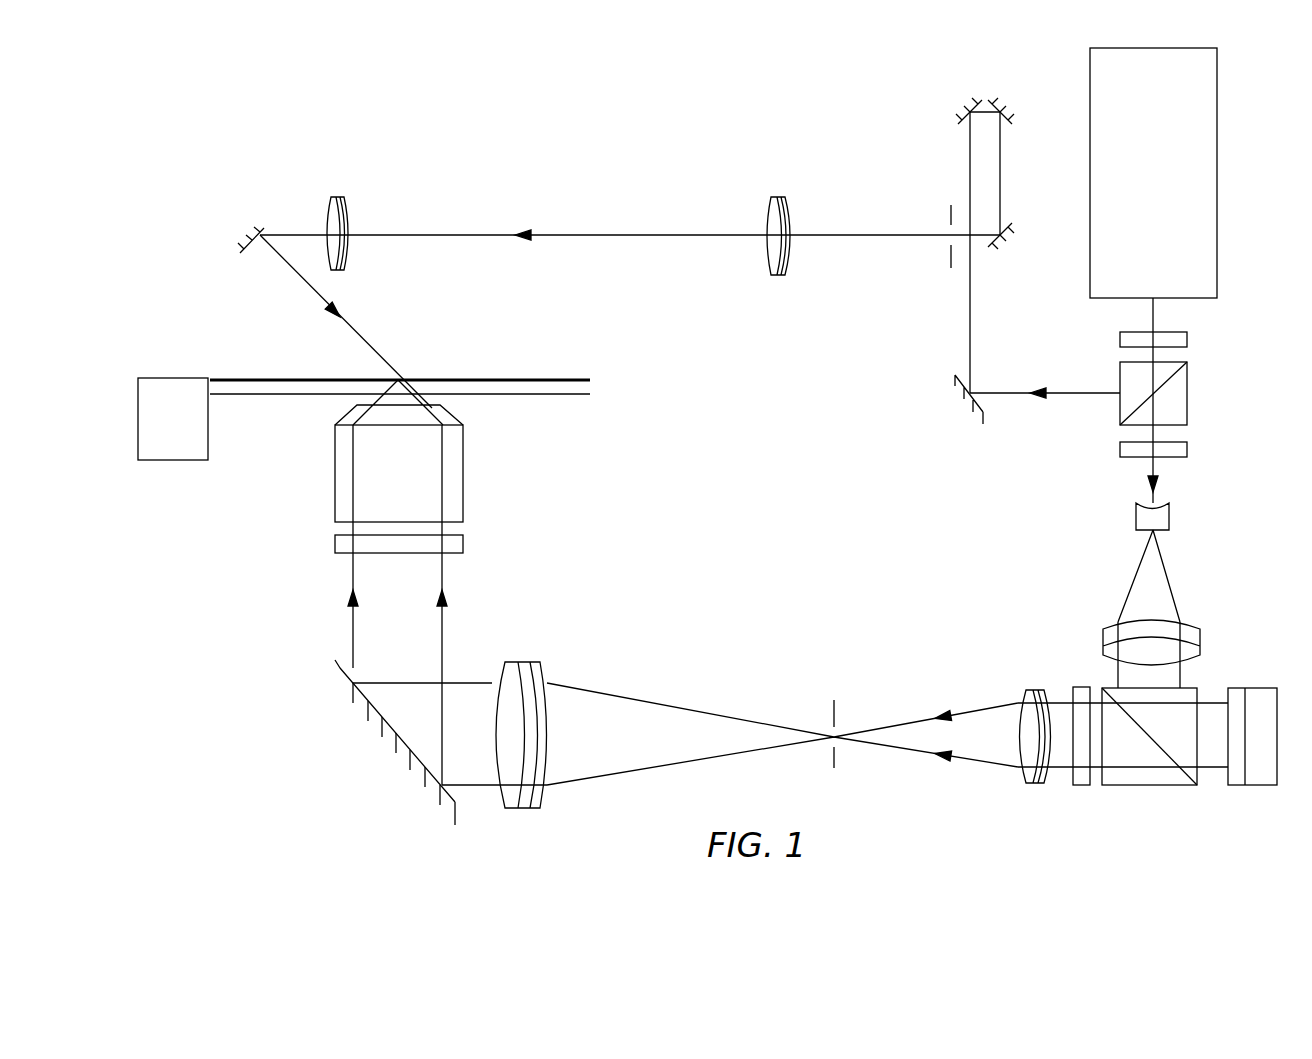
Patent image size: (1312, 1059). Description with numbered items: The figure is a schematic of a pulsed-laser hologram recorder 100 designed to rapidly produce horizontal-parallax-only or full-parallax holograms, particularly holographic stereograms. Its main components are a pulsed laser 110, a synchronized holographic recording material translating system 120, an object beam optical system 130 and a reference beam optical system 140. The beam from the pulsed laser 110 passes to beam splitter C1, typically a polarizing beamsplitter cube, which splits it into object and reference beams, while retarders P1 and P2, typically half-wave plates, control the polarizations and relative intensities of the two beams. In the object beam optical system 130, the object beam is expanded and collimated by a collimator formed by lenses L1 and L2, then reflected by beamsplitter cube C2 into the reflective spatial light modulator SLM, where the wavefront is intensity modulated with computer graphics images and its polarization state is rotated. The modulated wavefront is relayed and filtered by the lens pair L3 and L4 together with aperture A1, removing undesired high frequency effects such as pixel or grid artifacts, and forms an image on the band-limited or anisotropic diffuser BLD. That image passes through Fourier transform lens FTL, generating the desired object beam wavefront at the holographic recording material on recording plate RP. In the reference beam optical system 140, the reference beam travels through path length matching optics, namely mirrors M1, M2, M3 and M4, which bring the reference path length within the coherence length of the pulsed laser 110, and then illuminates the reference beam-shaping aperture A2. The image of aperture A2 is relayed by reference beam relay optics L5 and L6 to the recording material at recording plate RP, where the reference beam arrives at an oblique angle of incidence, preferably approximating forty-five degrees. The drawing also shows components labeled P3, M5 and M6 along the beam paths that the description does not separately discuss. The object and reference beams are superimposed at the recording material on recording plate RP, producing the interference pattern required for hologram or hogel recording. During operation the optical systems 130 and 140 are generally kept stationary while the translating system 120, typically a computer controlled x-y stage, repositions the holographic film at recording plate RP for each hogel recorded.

The hologram recorder 100 is at (325, 781).
The pulsed laser 110 is at (1167, 247).
The synchronized holographic recording material translating system 120 is at (159, 429).
The object beam optical system 130 is at (1250, 357).
The reference beam optical system 140 is at (676, 160).
The retarder P1 is at (1169, 339).
The retarder P2 is at (1169, 449).
The polarizer P3 is at (1084, 751).
The beam splitter C1 is at (1170, 393).
The beamsplitter cube C2 is at (1149, 752).
The lens L1 is at (1168, 516).
The lens L2 is at (1168, 642).
The lens L3 is at (1035, 722).
The lens L4 is at (521, 722).
The reference beam relay optics L5 is at (779, 223).
The reference beam relay optics L6 is at (339, 221).
The mirror M1 is at (965, 405).
The mirror M2 is at (961, 102).
The mirror M3 is at (1011, 102).
The mirror M4 is at (1009, 247).
The mirror M5 is at (238, 238).
The mirror M6 is at (395, 742).
The aperture A1 is at (836, 721).
The reference beam-shaping aperture A2 is at (952, 253).
The spatial light modulator SLM is at (1252, 752).
The Fourier transform lens FTL is at (420, 451).
The band-limited diffuser BLD is at (423, 547).
The recording plate RP is at (416, 388).